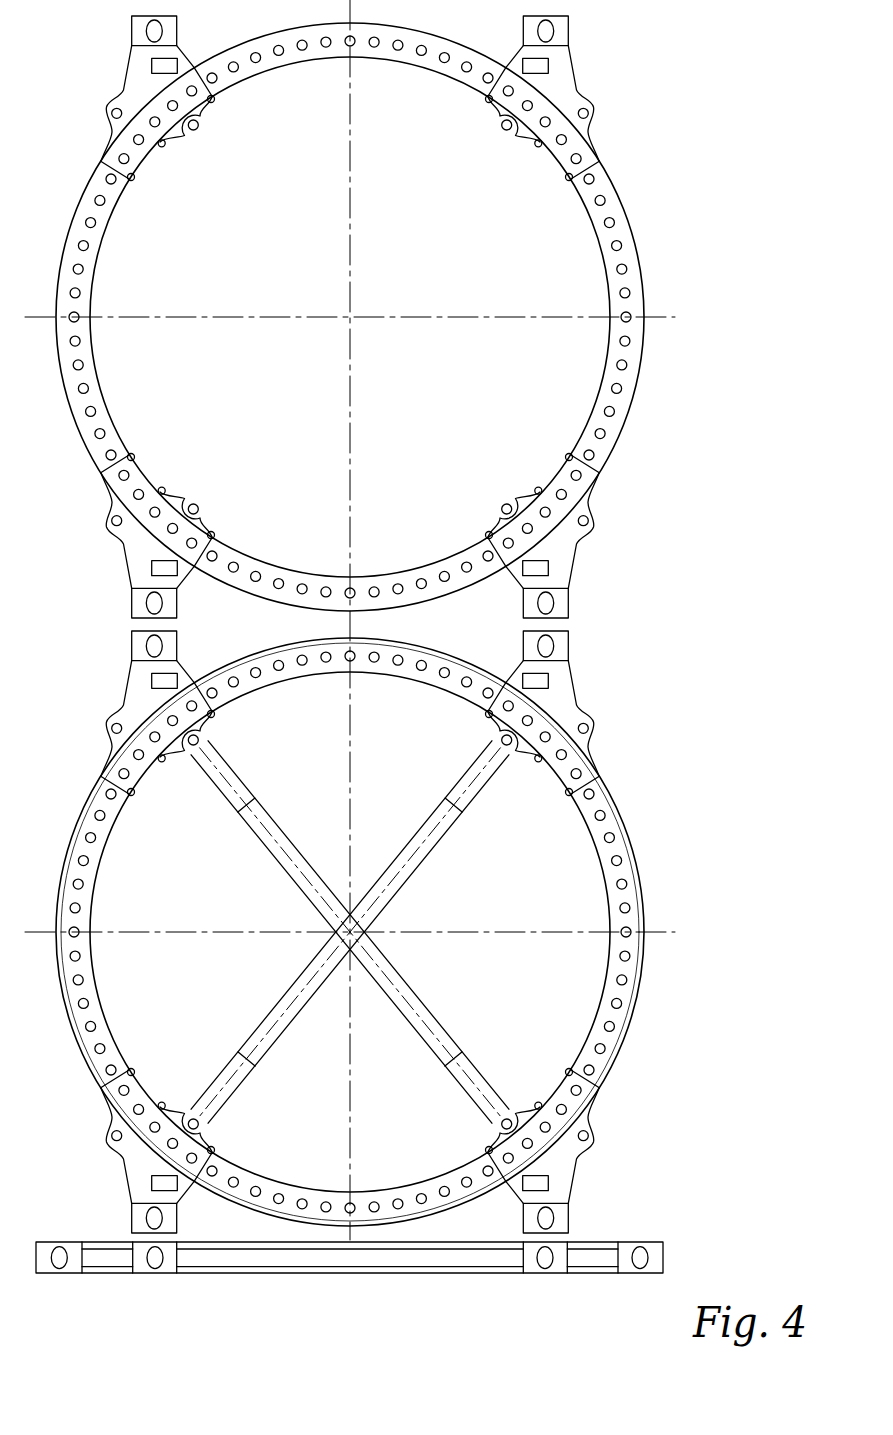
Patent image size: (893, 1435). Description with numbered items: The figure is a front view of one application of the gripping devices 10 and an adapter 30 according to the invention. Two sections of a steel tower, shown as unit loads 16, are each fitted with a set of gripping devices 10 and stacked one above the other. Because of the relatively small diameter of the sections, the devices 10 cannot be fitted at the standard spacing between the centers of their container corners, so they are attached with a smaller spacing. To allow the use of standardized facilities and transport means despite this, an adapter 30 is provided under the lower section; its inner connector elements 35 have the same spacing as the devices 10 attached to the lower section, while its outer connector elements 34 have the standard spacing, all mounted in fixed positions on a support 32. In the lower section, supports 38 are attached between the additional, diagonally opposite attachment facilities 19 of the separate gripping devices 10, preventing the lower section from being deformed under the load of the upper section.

The gripping device 10 is at (137, 78).
The unit load 16 is at (615, 203).
The attachment facility 19 is at (201, 131).
The adapter 30 is at (598, 1243).
The support 32 is at (405, 1268).
The outer connector element 34 is at (73, 1264).
The inner connector element 35 is at (168, 1264).
The support 38 is at (293, 845).